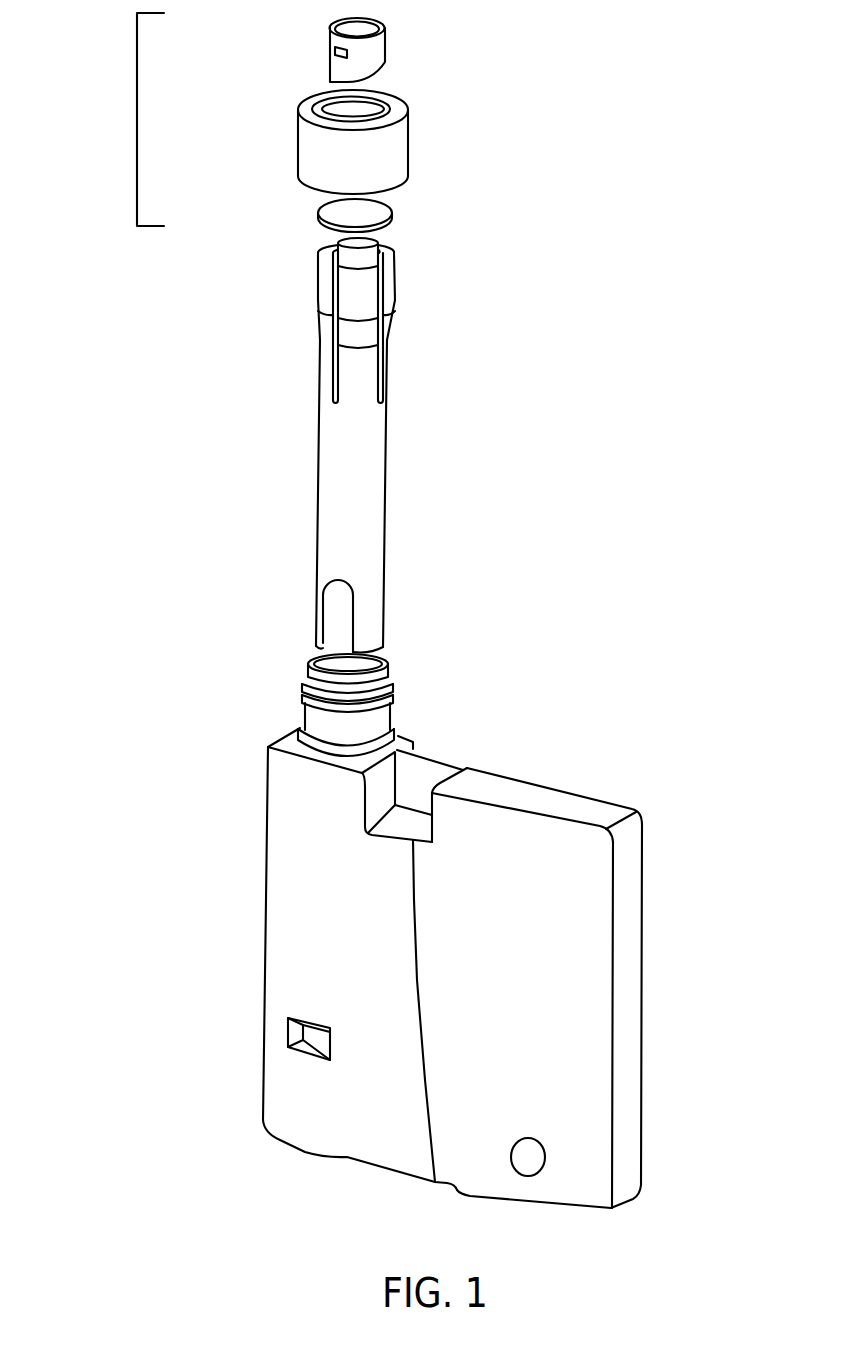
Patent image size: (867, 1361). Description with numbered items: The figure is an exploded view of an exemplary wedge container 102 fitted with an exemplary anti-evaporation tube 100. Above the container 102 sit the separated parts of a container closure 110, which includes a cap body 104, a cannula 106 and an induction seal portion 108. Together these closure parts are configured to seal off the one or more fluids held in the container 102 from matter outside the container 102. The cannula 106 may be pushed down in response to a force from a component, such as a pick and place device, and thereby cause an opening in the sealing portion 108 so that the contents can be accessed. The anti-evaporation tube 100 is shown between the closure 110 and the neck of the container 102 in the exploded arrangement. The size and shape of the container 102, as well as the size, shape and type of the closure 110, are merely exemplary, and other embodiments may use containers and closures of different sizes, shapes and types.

The anti-evaporation tube 100 is at (393, 448).
The wedge container 102 is at (565, 953).
The cap body 104 is at (298, 137).
The cannula 106 is at (327, 55).
The induction seal portion 108 is at (318, 217).
The container closure 110 is at (137, 120).